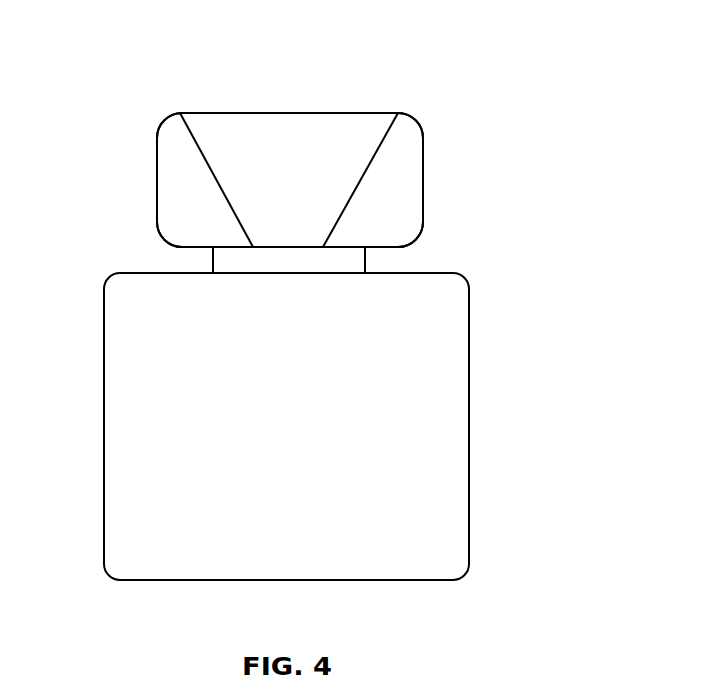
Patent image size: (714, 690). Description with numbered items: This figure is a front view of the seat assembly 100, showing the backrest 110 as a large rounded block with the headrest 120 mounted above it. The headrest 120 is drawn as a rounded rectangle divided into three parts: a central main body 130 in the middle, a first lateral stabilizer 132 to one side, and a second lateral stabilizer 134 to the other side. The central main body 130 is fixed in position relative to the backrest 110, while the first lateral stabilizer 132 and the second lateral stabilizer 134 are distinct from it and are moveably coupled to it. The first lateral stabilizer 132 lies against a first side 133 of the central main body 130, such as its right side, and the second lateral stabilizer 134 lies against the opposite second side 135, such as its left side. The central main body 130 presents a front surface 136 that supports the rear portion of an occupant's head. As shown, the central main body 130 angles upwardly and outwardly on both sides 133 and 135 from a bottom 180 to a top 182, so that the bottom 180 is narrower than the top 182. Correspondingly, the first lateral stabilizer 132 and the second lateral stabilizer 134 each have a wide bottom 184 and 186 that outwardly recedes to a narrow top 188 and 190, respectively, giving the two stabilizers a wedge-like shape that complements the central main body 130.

The seat assembly 100 is at (351, 295).
The backrest 110 is at (469, 378).
The headrest 120 is at (297, 134).
The central main body 130 is at (285, 113).
The first lateral stabilizer 132 is at (157, 222).
The first side 133 is at (212, 163).
The second lateral stabilizer 134 is at (423, 200).
The second side 135 is at (369, 162).
The front surface 136 is at (325, 140).
The bottom 180 is at (280, 247).
The top 182 is at (247, 113).
The wide bottom 184 is at (175, 238).
The wide bottom 186 is at (405, 233).
The narrow top 188 is at (180, 115).
The narrow top 190 is at (400, 118).